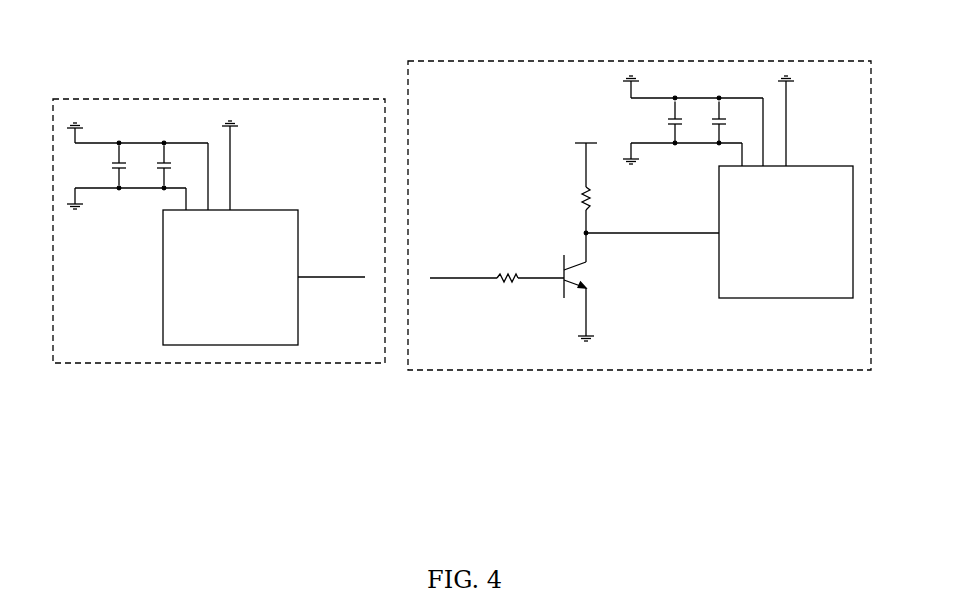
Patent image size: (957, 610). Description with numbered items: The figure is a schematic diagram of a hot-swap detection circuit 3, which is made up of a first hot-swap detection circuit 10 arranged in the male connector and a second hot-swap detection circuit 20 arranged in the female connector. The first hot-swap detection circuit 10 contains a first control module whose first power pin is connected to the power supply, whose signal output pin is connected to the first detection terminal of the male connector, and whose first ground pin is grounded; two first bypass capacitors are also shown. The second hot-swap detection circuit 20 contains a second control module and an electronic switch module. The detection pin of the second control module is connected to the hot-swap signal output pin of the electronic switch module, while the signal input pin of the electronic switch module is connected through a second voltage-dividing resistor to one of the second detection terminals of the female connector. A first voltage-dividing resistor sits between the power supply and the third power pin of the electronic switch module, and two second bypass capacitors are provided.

The hot-swap detection circuit 3 is at (367, 26).
The first hot-swap detection circuit 10 is at (220, 99).
The second hot-swap detection circuit 20 is at (635, 61).